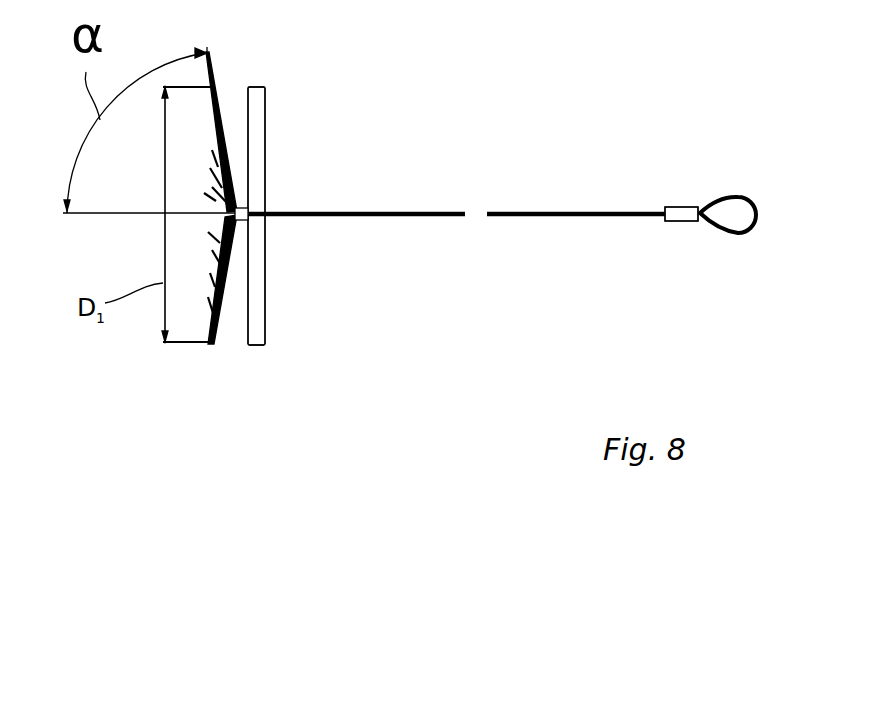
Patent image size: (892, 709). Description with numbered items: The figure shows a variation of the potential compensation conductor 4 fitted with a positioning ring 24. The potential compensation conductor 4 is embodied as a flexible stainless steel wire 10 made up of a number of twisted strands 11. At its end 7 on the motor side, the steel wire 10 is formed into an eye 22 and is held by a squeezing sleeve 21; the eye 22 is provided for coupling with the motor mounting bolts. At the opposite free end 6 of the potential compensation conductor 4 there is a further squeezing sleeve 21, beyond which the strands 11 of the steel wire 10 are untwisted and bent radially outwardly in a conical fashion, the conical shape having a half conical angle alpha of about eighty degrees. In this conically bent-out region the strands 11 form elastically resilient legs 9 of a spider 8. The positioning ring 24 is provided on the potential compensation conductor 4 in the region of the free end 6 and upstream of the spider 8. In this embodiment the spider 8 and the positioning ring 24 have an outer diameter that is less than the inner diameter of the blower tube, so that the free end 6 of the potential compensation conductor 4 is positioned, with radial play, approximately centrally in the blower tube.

The potential compensation conductor 4 is at (530, 140).
The free end 6 is at (254, 191).
The end on the motor side 7 is at (690, 178).
The spider 8 is at (215, 182).
The legs 9 is at (215, 100).
The steel wire 10 is at (418, 211).
The strands 11 is at (220, 203).
The squeezing sleeve 21 is at (238, 220).
The eye 22 is at (737, 210).
The positioning ring 24 is at (255, 333).